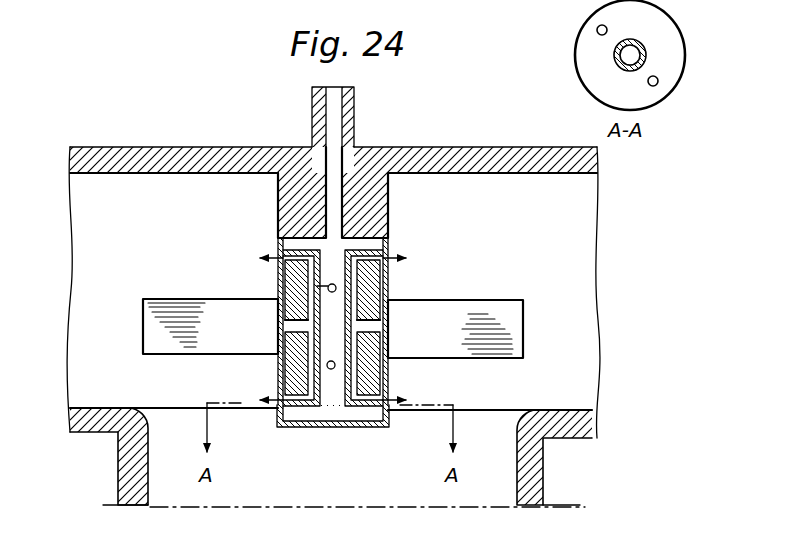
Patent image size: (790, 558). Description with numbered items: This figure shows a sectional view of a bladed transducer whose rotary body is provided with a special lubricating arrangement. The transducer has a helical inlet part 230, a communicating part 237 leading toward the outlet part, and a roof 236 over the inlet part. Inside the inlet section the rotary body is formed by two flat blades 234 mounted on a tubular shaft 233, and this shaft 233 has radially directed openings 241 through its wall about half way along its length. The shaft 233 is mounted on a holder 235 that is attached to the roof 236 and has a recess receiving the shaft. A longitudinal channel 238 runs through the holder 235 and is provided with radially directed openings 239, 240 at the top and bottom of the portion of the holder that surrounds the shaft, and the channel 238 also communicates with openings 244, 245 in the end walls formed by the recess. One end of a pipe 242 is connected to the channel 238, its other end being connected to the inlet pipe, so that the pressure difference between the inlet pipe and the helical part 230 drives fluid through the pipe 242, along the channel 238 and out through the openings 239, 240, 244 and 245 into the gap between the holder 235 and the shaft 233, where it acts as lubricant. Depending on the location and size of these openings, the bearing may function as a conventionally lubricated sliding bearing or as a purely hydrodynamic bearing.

The helical inlet part 230 is at (455, 190).
The tubular shaft 233 is at (376, 292).
The flat blades 234 is at (508, 315).
The holder 235 is at (288, 196).
The roof 236 is at (142, 152).
The communicating part 237 is at (544, 486).
The longitudinal channel 238 is at (387, 362).
The radially directed opening 239 is at (316, 270).
The radially directed opening 240 is at (333, 370).
The radially directed openings 241 is at (283, 326).
The pipe 242 is at (312, 112).
The opening 244 is at (287, 243).
The opening 245 is at (297, 424).